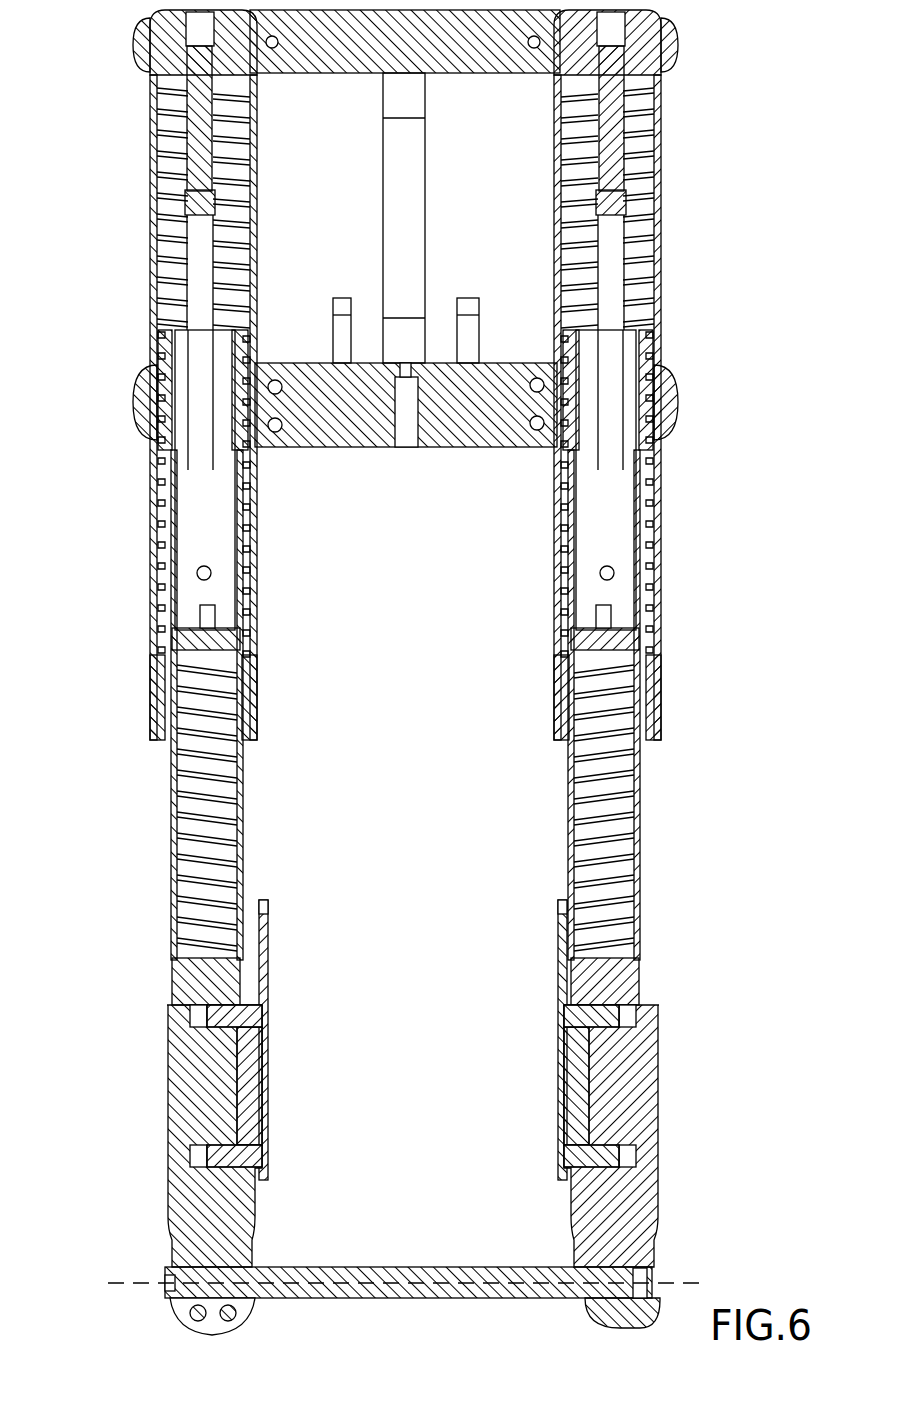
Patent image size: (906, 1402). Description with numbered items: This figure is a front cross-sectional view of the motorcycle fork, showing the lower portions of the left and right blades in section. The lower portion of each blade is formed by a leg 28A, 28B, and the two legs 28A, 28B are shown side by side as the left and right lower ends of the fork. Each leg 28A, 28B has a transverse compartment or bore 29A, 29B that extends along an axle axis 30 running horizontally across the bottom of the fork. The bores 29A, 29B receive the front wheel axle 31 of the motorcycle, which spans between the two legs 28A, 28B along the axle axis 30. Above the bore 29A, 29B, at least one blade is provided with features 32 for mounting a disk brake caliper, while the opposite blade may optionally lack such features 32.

The leg 28A is at (210, 1075).
The leg 28B is at (637, 1110).
The transverse compartment or bore 29A is at (238, 1290).
The transverse compartment or bore 29B is at (645, 1280).
The axle axis 30 is at (117, 1283).
The front wheel axle 31 is at (365, 1283).
The features for mounting a disk brake caliper 32 is at (260, 997).